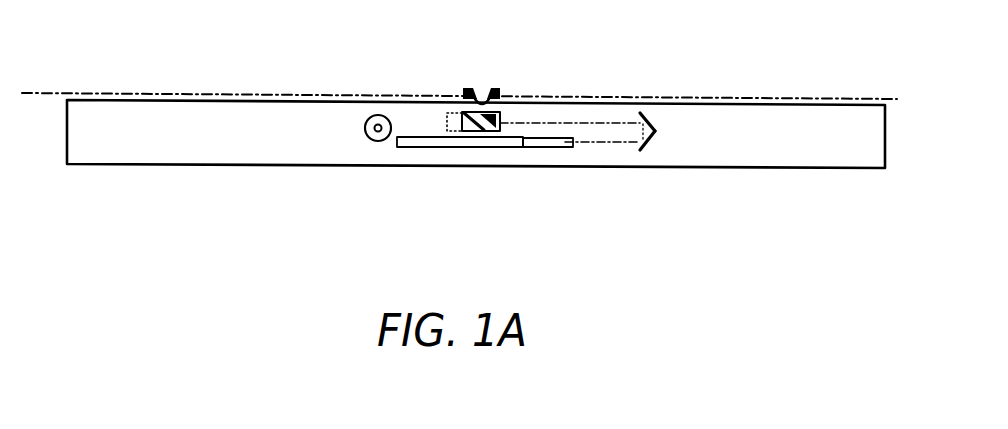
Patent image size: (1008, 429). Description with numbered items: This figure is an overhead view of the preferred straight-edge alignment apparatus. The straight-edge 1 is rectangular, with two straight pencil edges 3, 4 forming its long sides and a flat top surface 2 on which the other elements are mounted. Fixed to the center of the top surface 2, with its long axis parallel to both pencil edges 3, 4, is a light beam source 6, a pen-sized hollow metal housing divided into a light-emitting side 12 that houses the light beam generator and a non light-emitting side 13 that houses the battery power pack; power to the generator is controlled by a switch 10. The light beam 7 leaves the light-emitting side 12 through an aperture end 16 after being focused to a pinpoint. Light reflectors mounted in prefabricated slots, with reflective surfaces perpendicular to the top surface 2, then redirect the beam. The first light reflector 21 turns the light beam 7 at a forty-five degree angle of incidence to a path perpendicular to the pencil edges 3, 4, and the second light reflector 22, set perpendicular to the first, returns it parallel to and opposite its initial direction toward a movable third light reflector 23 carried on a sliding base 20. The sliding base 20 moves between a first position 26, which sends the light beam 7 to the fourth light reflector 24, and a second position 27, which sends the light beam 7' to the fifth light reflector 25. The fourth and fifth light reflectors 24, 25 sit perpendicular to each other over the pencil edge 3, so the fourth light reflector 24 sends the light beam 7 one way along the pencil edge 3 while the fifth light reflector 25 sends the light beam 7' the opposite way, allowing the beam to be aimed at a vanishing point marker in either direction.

The straight-edge 1 is at (67, 138).
The flat top surface 2 is at (108, 118).
The pencil edge 3 is at (120, 100).
The pencil edge 4 is at (170, 165).
The light beam source 6 is at (527, 148).
The light beam 7 is at (620, 133).
The light beam 7' is at (241, 65).
The switch 10 is at (368, 140).
The light-emitting side 12 is at (573, 145).
The non light-emitting side 13 is at (427, 145).
The aperture end 16 is at (555, 143).
The sliding base 20 is at (470, 135).
The first light reflector 21 is at (655, 140).
The second light reflector 22 is at (656, 128).
The third light reflector 23 is at (497, 113).
The fourth light reflector 24 is at (500, 90).
The fifth light reflector 25 is at (492, 118).
The first position 26 is at (462, 128).
The second position 27 is at (447, 122).